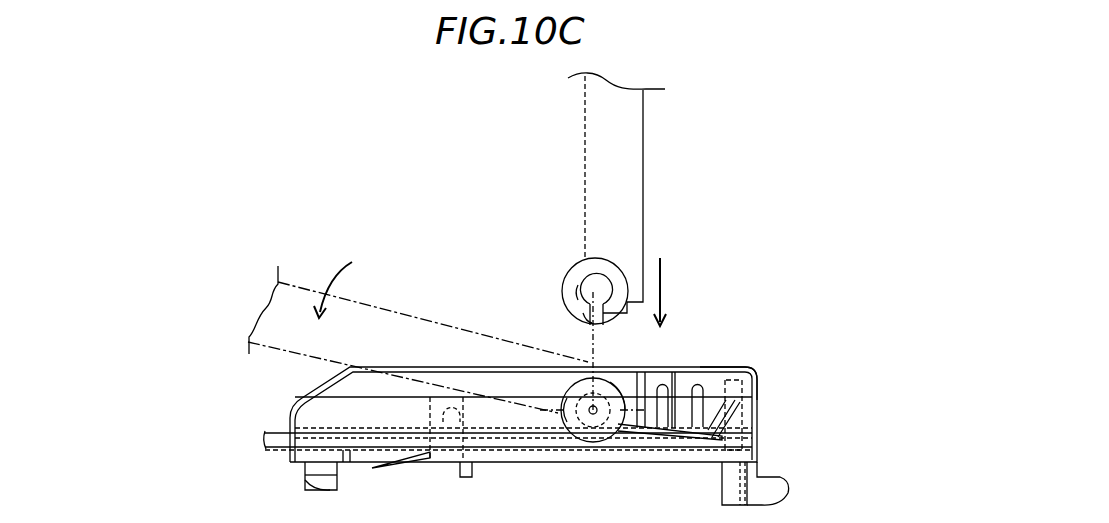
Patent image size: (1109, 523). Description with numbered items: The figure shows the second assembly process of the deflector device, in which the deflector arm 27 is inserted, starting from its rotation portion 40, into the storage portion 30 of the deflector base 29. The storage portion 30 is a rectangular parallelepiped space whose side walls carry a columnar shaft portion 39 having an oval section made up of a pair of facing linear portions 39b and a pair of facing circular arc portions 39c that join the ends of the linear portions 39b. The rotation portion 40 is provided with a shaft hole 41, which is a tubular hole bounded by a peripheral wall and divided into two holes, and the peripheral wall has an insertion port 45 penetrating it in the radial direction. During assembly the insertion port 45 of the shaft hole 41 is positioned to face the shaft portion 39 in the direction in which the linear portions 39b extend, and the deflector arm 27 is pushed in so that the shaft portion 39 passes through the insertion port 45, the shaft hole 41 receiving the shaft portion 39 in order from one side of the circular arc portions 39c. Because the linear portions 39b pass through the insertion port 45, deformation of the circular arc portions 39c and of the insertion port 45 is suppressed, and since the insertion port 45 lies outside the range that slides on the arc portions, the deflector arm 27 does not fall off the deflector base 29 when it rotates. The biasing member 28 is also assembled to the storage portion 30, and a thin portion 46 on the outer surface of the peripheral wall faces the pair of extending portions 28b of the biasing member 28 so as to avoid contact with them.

The deflector arm 27 is at (643, 163).
The biasing member 28 is at (272, 431).
The extending portions 28b is at (268, 452).
The deflector base 29 is at (757, 370).
The storage portion 30 is at (376, 362).
The shaft portion 39 is at (633, 368).
The linear portions 39b is at (562, 404).
The circular arc portions 39c is at (585, 368).
The rotation portion 40 is at (568, 266).
The shaft hole 41 is at (605, 278).
The insertion port 45 is at (588, 320).
The thin portion 46 is at (576, 293).